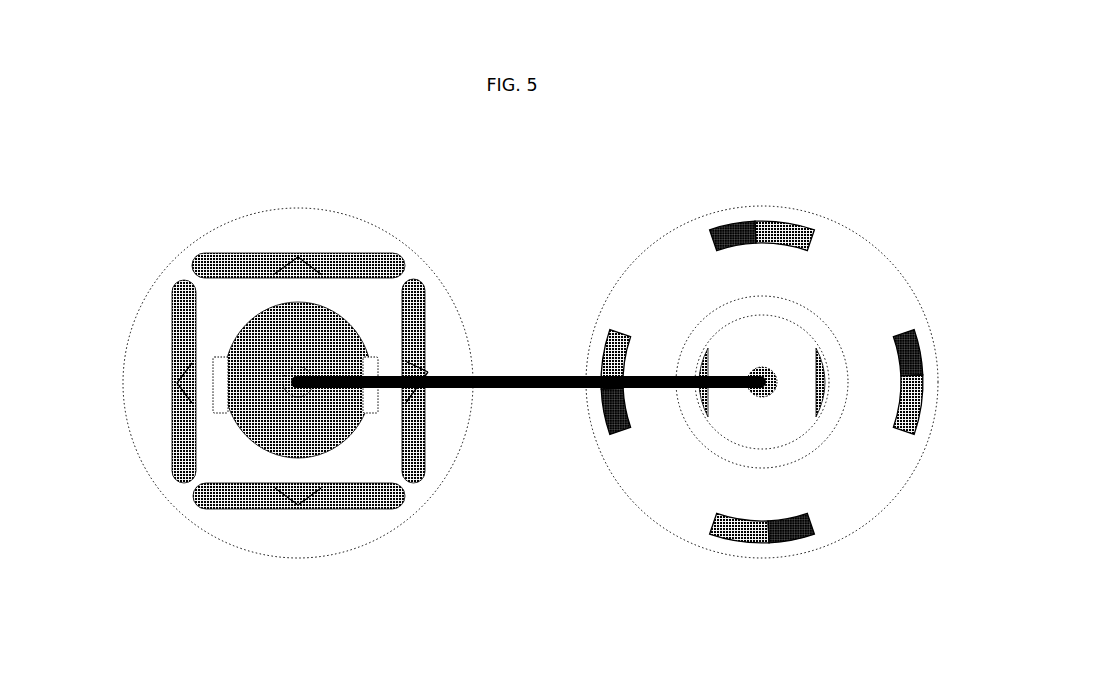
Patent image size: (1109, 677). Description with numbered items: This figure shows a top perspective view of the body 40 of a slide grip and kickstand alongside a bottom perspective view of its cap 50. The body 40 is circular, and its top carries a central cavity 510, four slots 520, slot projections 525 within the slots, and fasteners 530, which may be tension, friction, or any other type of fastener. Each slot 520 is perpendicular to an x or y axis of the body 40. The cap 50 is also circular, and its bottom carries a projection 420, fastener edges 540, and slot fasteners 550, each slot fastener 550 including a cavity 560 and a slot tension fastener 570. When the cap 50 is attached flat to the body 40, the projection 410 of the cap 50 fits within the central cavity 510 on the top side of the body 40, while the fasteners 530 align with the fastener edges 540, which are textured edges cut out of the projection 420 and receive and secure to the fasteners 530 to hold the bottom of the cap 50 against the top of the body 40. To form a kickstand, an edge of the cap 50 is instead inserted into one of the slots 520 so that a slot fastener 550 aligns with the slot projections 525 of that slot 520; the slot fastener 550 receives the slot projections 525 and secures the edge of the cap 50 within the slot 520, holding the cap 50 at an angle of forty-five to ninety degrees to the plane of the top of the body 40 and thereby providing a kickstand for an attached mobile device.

The body 40 is at (352, 532).
The cap 50 is at (675, 500).
The projection 410 is at (515, 388).
The projection 420 is at (750, 335).
The central cavity 510 is at (278, 439).
The slots 520 is at (345, 265).
The slot projections 525 is at (298, 257).
The fasteners 530 is at (368, 365).
The fastener edges 540 is at (707, 368).
The slot fasteners 550 is at (760, 380).
The cavity 560 is at (788, 232).
The slot tension fastener 570 is at (733, 240).